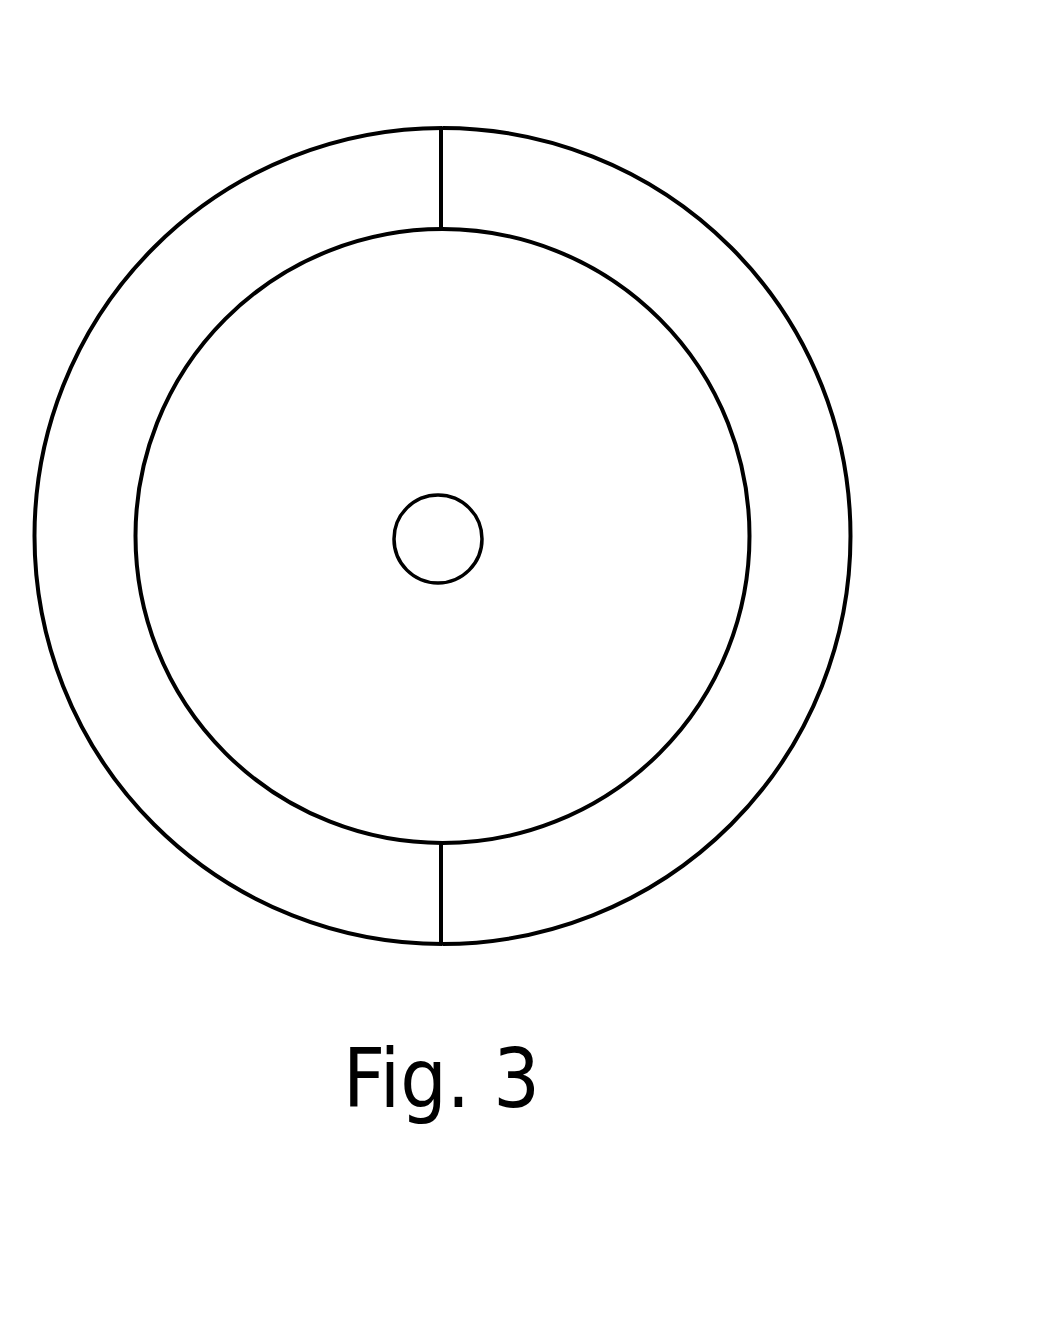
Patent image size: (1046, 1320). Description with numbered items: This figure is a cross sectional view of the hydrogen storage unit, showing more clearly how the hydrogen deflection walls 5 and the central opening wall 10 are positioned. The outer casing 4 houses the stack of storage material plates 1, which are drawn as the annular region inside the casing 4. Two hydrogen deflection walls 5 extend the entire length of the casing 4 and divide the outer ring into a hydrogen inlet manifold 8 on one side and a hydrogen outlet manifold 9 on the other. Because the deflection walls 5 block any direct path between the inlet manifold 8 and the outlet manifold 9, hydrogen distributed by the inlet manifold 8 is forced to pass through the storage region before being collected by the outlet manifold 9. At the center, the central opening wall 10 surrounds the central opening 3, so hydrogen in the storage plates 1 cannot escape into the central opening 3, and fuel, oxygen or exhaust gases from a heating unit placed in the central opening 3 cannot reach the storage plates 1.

The storage material plates 1 is at (443, 536).
The central opening 3 is at (485, 541).
The casing 4 is at (443, 547).
The hydrogen deflection walls 5 is at (440, 160).
The hydrogen inlet manifold 8 is at (750, 306).
The hydrogen outlet manifold 9 is at (260, 862).
The central opening wall 10 is at (665, 539).